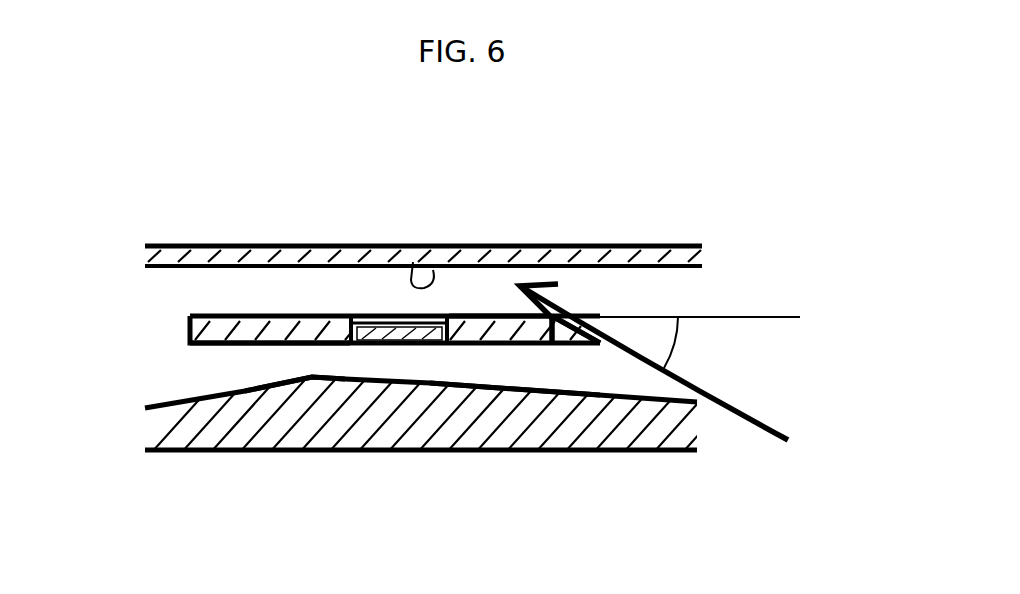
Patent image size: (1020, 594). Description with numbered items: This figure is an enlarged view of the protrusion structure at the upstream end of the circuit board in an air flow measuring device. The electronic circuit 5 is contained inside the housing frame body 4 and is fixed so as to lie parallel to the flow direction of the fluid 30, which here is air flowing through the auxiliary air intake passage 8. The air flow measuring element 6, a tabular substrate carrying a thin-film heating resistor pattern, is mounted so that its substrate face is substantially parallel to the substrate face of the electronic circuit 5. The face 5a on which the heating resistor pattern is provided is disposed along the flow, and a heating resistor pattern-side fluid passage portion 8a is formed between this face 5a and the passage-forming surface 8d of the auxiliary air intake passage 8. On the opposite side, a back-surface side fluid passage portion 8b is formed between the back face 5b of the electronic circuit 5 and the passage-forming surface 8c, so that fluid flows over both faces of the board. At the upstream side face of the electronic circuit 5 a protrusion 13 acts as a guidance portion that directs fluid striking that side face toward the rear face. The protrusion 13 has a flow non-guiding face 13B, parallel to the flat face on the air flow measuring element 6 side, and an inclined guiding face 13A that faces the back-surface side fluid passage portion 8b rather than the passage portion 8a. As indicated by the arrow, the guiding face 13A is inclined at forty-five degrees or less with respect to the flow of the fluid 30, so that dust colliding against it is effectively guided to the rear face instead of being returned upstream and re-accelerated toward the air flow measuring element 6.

The housing frame body 4 is at (150, 452).
The electronic circuit 5 is at (330, 323).
The heating resistor pattern-comprising face 5a is at (262, 345).
The back face 5b is at (480, 316).
The air flow measuring element 6 is at (420, 344).
The auxiliary air intake passage 8 is at (176, 305).
The heating resistor pattern-side fluid passage portion 8a is at (360, 350).
The back-surface side fluid passage portion 8b is at (356, 285).
The passage-forming surface 8c is at (413, 262).
The passage-forming surface 8d is at (472, 400).
The protrusion 13 is at (588, 346).
The guiding face 13A is at (587, 317).
The flow non-guiding face 13B is at (563, 344).
The fluid 30 is at (717, 318).